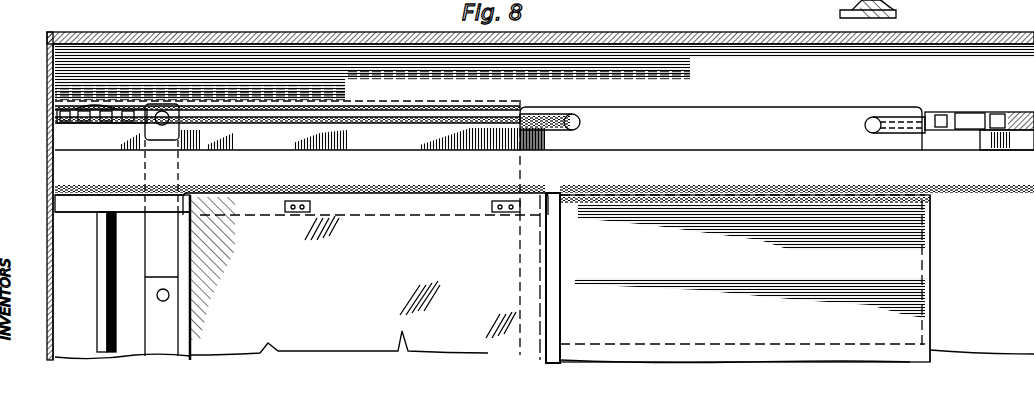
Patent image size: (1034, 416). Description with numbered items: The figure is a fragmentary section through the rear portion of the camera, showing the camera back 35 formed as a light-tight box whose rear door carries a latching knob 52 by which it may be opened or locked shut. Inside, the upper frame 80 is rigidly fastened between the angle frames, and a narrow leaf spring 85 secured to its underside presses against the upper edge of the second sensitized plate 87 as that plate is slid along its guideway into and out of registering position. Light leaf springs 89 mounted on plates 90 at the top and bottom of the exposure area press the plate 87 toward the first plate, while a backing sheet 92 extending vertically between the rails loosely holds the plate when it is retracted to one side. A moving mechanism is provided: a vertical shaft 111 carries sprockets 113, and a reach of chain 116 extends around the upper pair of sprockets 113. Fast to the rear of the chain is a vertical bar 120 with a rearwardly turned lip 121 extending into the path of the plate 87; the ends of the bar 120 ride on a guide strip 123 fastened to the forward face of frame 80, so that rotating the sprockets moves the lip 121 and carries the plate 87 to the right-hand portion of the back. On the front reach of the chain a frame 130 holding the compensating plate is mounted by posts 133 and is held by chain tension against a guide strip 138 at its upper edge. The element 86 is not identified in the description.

The camera back 35 is at (978, 32).
The latching knob 52 is at (896, 14).
The frame 80 is at (618, 162).
The leaf spring 85 is at (404, 198).
The frame member 86 is at (565, 4).
The second sensitized plate 87 is at (375, 231).
The light leaf springs 89 is at (266, 216).
The plates 90 is at (330, 218).
The backing sheet 92 is at (908, 288).
The vertical shaft 111 is at (102, 256).
The sprockets 113 is at (60, 112).
The chain 116 is at (424, 104).
The bar 120 is at (150, 263).
The lip 121 is at (160, 138).
The guide strip 123 is at (462, 128).
The frame 130 is at (758, 98).
The posts 133 is at (882, 116).
The guide strip 138 is at (578, 116).